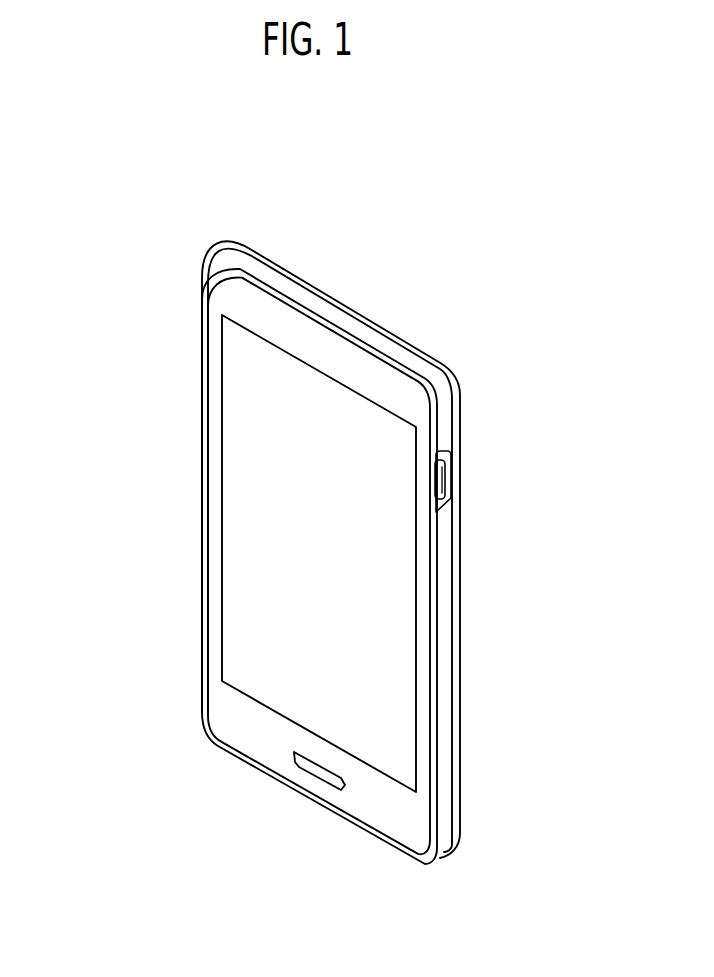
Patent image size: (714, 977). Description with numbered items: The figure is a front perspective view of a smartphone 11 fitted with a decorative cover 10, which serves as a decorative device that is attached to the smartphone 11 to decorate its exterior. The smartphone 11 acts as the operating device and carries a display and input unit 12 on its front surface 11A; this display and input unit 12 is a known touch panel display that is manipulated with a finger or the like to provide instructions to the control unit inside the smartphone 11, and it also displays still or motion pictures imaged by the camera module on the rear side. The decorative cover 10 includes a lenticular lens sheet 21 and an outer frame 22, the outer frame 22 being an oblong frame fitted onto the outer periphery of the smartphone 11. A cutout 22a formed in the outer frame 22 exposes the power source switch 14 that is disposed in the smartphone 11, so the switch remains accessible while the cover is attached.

The decorative cover 10 is at (462, 373).
The smartphone 11 is at (196, 488).
The front surface 11A is at (220, 710).
The display and input unit 12 is at (240, 585).
The power source switch 14 is at (449, 479).
The lenticular lens sheet 21 is at (472, 786).
The outer frame 22 is at (461, 642).
The cutout 22a is at (452, 498).